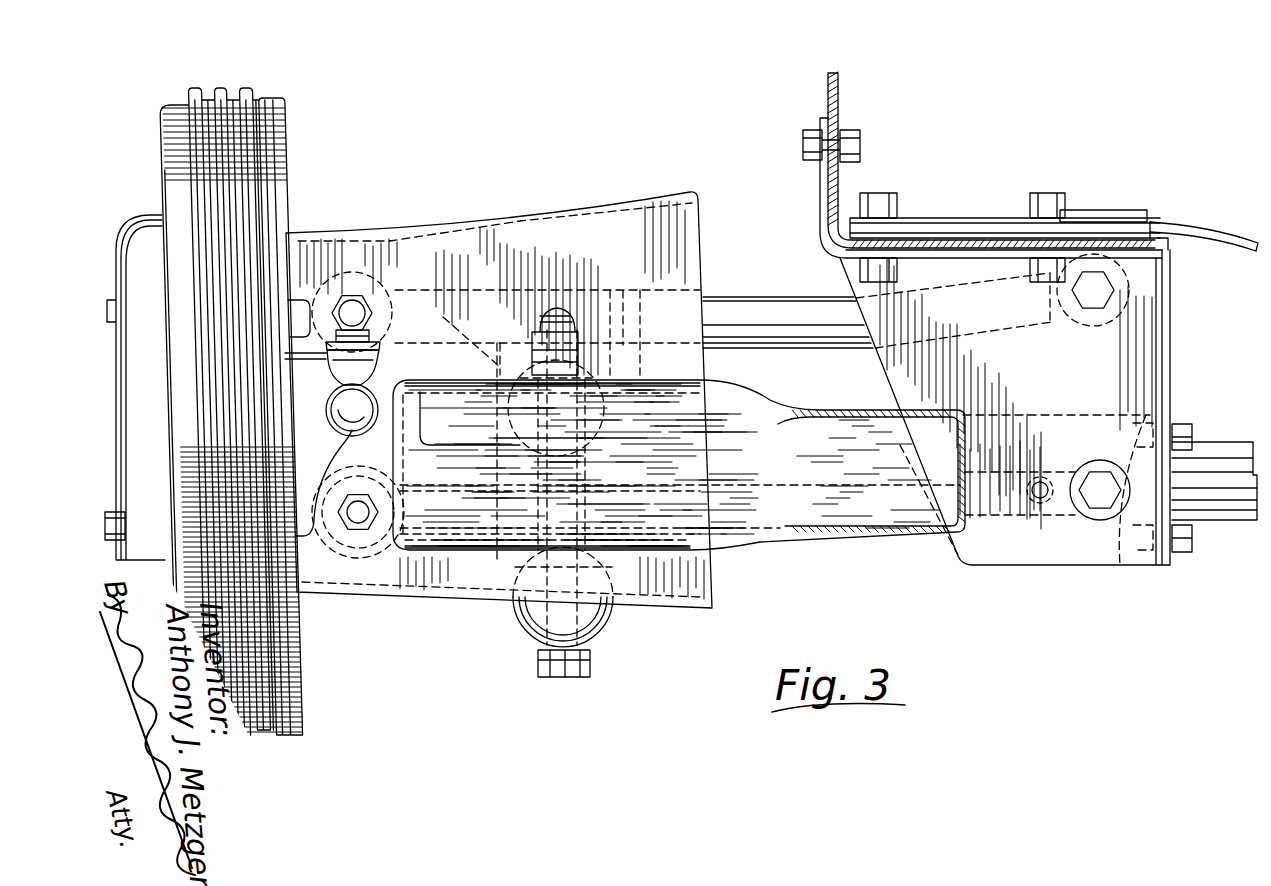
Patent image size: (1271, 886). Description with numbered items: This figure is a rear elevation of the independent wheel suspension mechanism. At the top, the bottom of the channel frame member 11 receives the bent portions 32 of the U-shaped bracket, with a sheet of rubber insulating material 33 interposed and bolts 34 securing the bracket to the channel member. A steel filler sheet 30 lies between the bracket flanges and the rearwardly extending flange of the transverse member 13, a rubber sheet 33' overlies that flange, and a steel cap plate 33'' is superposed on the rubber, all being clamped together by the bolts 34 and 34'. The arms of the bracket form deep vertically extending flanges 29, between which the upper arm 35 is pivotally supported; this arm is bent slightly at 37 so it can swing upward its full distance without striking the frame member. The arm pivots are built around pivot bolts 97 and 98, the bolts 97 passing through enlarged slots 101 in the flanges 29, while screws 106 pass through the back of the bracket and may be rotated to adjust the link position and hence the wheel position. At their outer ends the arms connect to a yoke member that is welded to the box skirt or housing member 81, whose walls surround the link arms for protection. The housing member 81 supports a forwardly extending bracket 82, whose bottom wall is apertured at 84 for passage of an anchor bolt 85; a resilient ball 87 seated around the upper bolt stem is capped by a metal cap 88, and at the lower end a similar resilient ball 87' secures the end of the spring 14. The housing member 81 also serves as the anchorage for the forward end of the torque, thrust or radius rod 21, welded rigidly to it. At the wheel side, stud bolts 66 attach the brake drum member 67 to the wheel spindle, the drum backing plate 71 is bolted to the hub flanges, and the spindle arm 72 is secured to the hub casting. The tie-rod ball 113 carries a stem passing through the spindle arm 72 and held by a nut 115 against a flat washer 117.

The channel frame member 11 is at (838, 108).
The transverse member 13 is at (1175, 228).
The spring 14 is at (1224, 516).
The torque, thrust or radius rod 21 is at (850, 536).
The vertically extending flanges 29 is at (1003, 550).
The steel filler sheet 30 is at (1168, 242).
The bracket end portions 32 is at (820, 210).
The insulating sheet 33 is at (808, 130).
The resilient sheet 33' is at (1103, 198).
The steel cap plate 33'' is at (1005, 207).
The bolts 34 is at (885, 220).
The bolts 34' is at (1052, 217).
The arm 35 is at (712, 300).
The bend 37 is at (838, 350).
The stud bolts 66 is at (118, 528).
The brake drum member 67 is at (157, 326).
The drum backing plate 71 is at (285, 146).
The spindle arm 72 is at (311, 360).
The box skirt or housing member 81 is at (596, 206).
The forwardly extending bracket 82 is at (640, 312).
The aperture or slot 84 is at (592, 450).
The anchor bolt 85 is at (575, 506).
The resilient ball 87 is at (523, 476).
The resilient ball 87' is at (565, 597).
The metal cap 88 is at (545, 640).
The pivot bolts 97 is at (1098, 497).
The pivot bolts 98 is at (356, 312).
The slots 101 is at (1096, 466).
The adjusting screws 106 is at (1190, 434).
The ball 113 is at (343, 422).
The nut 115 is at (370, 332).
The flat washer 117 is at (380, 345).